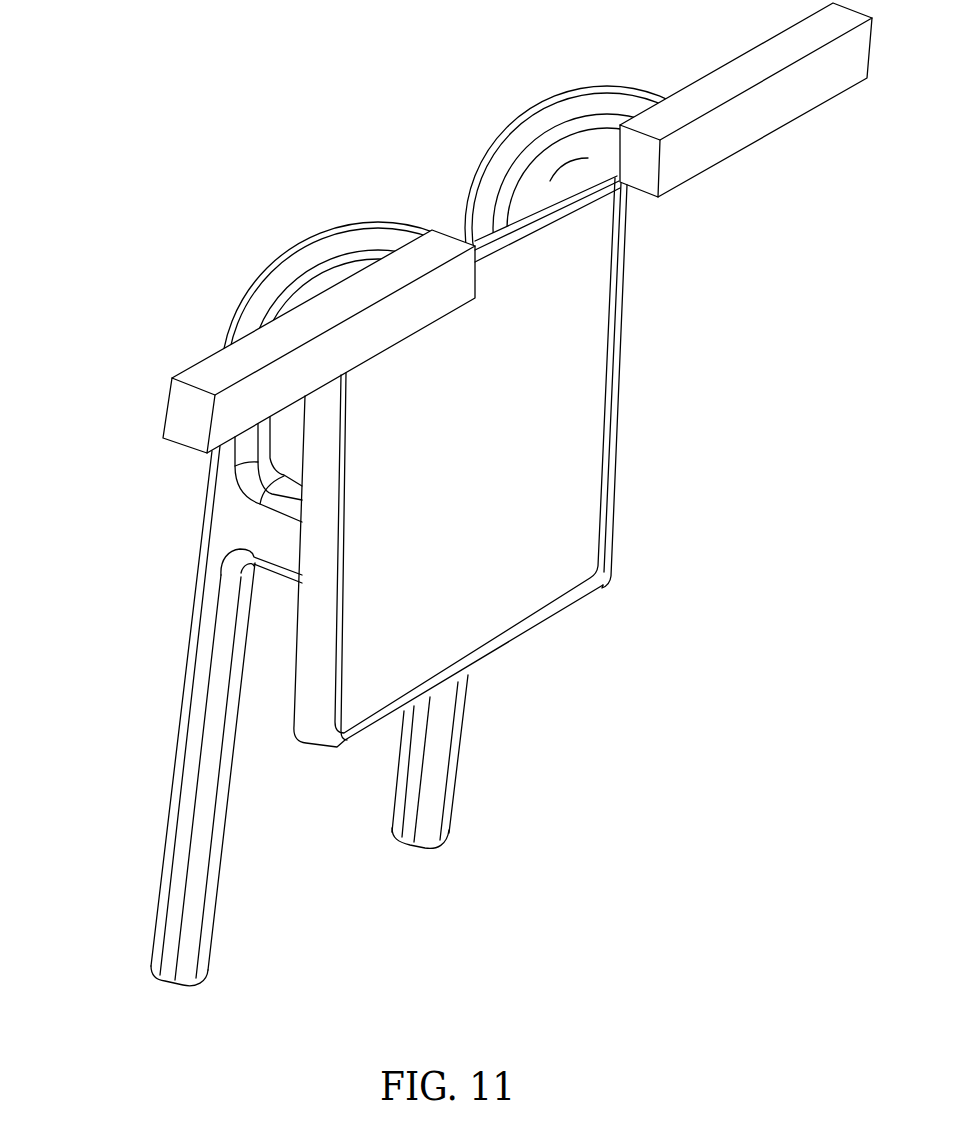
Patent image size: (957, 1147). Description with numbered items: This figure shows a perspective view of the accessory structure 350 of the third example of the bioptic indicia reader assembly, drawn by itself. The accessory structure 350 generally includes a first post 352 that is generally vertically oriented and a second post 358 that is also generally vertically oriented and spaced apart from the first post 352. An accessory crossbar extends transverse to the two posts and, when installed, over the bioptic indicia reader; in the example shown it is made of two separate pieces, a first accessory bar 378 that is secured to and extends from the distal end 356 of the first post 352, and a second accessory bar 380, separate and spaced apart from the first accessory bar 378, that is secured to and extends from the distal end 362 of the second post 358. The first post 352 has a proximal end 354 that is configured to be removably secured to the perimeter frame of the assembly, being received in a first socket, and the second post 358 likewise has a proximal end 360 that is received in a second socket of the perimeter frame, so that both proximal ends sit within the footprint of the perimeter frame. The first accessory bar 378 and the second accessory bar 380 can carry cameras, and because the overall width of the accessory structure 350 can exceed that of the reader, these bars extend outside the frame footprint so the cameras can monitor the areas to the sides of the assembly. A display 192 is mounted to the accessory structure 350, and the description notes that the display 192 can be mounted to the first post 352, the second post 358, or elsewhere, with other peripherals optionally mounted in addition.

The accessory structure 350 is at (399, 495).
The first post 352 is at (152, 716).
The proximal end 354 is at (140, 955).
The distal end 356 is at (422, 216).
The second post 358 is at (473, 765).
The proximal end 360 is at (465, 830).
The distal end 362 is at (670, 72).
The first accessory bar 378 is at (196, 362).
The second accessory bar 380 is at (765, 140).
The display 192 is at (624, 388).